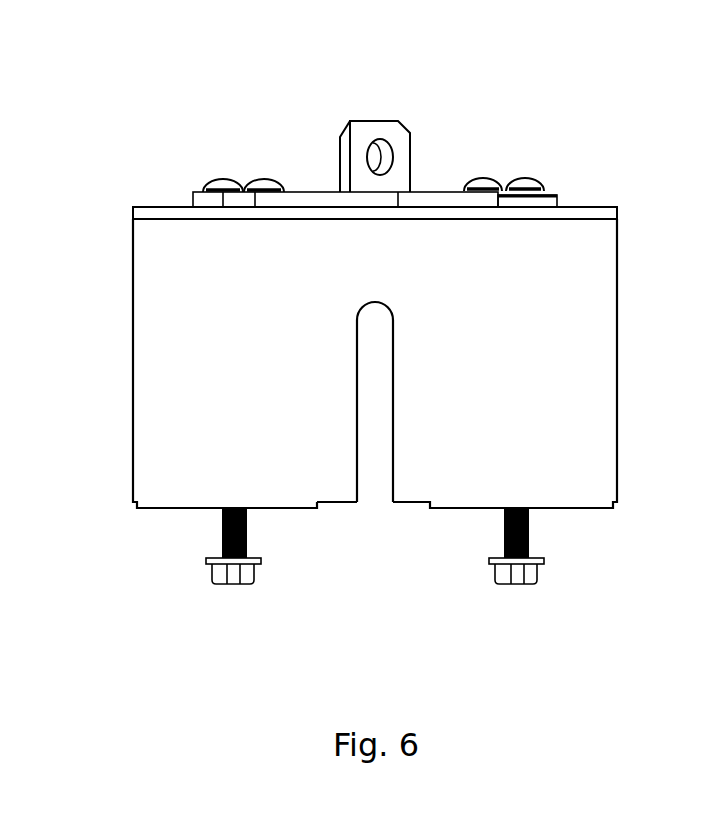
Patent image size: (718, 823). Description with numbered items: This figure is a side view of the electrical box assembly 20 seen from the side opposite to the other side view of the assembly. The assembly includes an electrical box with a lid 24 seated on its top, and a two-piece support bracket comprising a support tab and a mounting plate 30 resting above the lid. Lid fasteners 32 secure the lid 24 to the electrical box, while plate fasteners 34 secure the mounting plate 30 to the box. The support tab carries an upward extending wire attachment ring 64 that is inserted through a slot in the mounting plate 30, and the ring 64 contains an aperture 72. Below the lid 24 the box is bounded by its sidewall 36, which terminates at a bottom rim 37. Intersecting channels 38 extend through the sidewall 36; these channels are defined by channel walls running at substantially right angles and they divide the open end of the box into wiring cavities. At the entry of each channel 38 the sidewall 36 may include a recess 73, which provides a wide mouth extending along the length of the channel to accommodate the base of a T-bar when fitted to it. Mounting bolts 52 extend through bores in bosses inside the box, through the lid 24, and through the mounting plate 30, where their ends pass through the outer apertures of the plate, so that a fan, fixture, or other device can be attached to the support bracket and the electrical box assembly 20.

The electrical box assembly 20 is at (126, 121).
The lid 24 is at (624, 213).
The mounting plate 30 is at (558, 198).
The lid fasteners 32 is at (266, 178).
The plate fasteners 34 is at (226, 181).
The sidewall 36 is at (230, 357).
The bottom rim 37 is at (568, 522).
The intersecting channels 38 is at (375, 388).
The mounting bolts 52 is at (512, 584).
The wire attachment ring 64 is at (404, 125).
The aperture 72 is at (372, 157).
The recess 73 is at (340, 503).